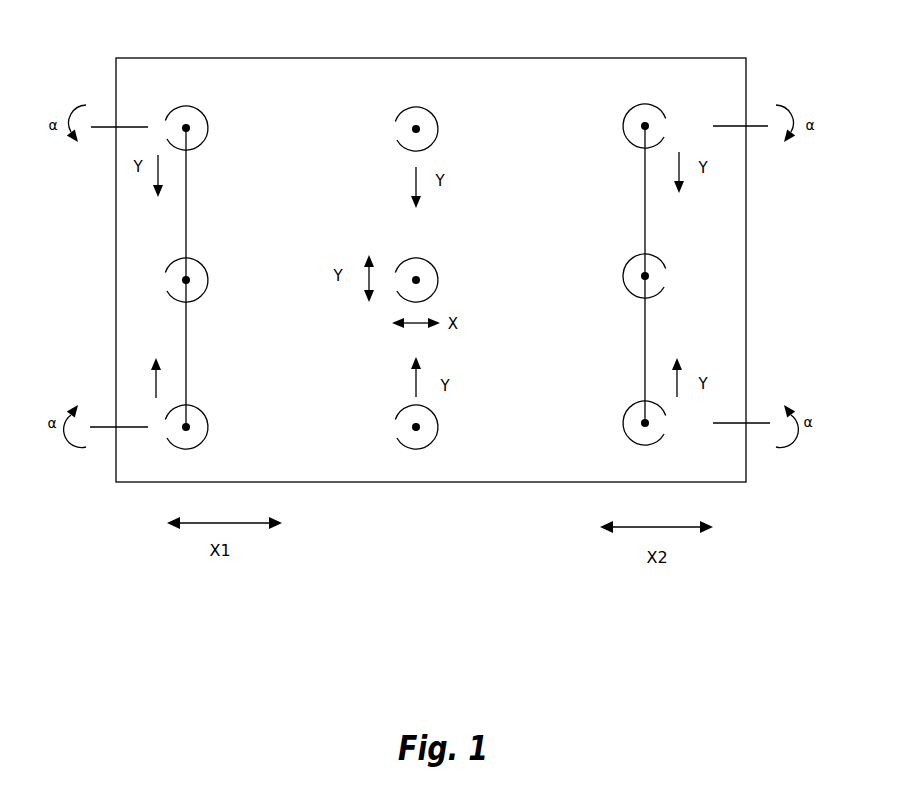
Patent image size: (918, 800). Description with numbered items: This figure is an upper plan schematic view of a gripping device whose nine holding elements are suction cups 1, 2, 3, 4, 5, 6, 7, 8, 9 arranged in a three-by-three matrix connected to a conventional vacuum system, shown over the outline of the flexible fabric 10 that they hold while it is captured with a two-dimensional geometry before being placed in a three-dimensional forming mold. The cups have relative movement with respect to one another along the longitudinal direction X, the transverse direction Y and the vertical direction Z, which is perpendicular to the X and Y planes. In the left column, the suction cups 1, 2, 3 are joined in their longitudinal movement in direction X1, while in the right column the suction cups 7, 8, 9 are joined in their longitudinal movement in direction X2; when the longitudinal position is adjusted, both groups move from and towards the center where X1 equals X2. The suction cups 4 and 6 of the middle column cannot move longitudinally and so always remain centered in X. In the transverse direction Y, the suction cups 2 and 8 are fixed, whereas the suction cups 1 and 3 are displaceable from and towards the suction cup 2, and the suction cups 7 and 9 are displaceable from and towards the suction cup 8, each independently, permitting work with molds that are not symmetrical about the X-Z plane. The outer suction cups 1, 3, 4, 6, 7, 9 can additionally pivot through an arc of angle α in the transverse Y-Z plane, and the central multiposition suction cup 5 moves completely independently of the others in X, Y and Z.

The flexible fabric 10 is at (106, 49).
The suction cup 1 is at (196, 128).
The suction cup 2 is at (194, 280).
The suction cup 3 is at (199, 427).
The suction cup 4 is at (426, 129).
The central multiposition suction cup 5 is at (429, 280).
The suction cup 6 is at (429, 427).
The suction cup 7 is at (628, 126).
The suction cup 8 is at (629, 276).
The suction cup 9 is at (631, 423).